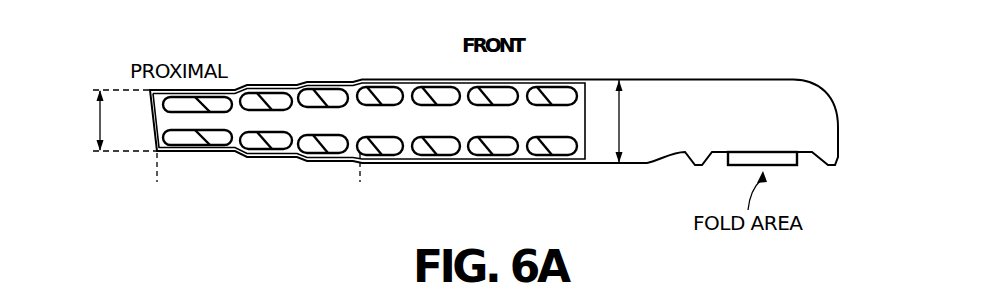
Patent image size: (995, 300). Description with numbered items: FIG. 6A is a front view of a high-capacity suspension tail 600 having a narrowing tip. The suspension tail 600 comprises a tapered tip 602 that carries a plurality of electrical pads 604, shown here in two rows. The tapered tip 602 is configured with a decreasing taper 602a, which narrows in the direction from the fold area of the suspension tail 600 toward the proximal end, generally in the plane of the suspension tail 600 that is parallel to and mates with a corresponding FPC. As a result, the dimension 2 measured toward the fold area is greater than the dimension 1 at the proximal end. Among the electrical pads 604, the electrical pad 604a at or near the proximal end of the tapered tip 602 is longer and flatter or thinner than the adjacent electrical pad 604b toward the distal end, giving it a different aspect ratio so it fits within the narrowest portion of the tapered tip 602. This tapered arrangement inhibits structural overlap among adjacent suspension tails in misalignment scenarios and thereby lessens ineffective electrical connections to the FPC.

The suspension tail 600 is at (210, 28).
The tapered tip 602 is at (340, 82).
The decreasing taper 602a is at (157, 183).
The electrical pads 604 is at (590, 88).
The electrical pad 604a is at (207, 107).
The adjacent electrical pad 604b is at (267, 137).
The dimension 1 is at (100, 119).
The dimension 2 is at (620, 119).